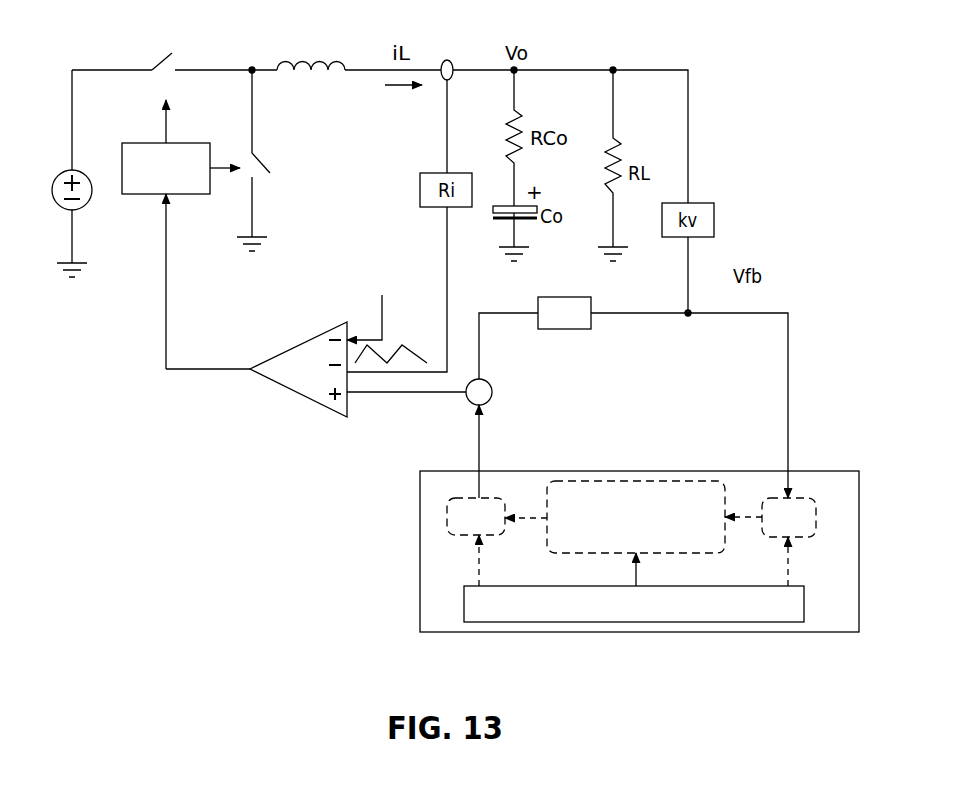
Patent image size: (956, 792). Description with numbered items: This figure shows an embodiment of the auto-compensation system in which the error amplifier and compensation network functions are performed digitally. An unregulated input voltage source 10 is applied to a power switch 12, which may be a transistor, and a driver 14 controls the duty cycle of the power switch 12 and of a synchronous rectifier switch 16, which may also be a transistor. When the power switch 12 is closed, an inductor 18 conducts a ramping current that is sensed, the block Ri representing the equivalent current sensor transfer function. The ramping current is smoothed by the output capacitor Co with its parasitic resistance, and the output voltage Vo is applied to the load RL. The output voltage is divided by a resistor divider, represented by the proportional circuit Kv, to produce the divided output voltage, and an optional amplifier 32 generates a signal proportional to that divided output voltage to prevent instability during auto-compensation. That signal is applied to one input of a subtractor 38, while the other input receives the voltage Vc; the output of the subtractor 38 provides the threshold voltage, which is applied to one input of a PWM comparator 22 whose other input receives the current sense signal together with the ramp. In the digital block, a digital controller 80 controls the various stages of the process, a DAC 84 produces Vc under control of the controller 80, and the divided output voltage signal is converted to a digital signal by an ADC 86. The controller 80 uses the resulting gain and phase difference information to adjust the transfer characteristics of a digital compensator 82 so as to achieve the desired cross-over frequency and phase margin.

The input voltage source 10 is at (55, 172).
The power switch 12 is at (156, 65).
The driver 14 is at (138, 142).
The synchronous rectifier switch 16 is at (264, 166).
The inductor 18 is at (318, 60).
The PWM comparator 22 is at (302, 343).
The amplifier 32 is at (572, 297).
The subtractor 38 is at (493, 388).
The digital controller 80 is at (464, 612).
The digital compensator 82 is at (688, 481).
The DAC 84 is at (447, 520).
The ADC 86 is at (803, 498).